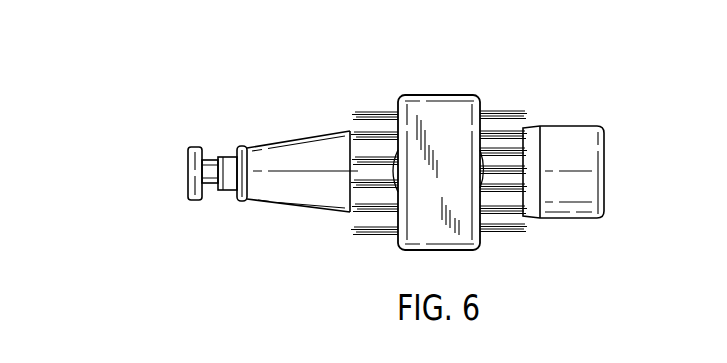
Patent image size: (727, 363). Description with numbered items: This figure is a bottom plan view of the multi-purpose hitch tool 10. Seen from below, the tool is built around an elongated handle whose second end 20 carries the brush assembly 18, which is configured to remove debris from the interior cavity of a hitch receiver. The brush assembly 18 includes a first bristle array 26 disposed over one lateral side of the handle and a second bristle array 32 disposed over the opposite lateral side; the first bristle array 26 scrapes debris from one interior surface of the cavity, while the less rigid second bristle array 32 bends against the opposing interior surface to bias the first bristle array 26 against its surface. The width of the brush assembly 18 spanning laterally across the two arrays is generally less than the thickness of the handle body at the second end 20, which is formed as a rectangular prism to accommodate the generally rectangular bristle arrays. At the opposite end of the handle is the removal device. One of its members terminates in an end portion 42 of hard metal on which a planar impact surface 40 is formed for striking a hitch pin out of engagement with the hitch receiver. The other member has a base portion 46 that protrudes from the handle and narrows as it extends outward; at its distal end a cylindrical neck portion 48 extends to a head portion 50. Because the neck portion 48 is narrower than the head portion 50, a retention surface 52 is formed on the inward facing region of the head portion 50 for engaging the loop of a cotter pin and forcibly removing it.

The multi-purpose hitch tool 10 is at (136, 105).
The brush assembly 18 is at (372, 81).
The second end 20 is at (441, 118).
The first bristle array 26 is at (546, 243).
The second bristle array 32 is at (336, 244).
The planar impact surface 40 is at (605, 177).
The end portion 42 is at (575, 122).
The base portion 46 is at (292, 165).
The neck portion 48 is at (209, 158).
The head portion 50 is at (190, 170).
The retention surface 52 is at (206, 192).